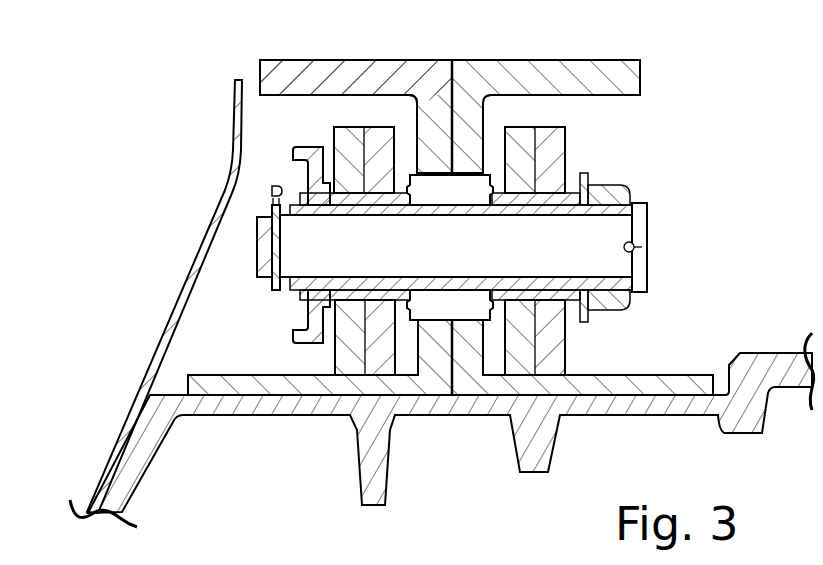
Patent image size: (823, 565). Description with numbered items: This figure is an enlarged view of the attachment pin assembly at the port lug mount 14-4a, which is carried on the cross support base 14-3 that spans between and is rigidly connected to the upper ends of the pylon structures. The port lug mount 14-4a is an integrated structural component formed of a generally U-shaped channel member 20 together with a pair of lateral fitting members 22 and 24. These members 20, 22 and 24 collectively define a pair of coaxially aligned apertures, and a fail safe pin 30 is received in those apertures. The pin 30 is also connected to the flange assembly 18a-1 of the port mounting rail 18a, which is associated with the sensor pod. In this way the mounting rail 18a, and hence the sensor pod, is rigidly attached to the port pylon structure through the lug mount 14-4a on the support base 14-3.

The port mounting rail 18a is at (622, 83).
The flange assembly 18a-1 is at (470, 143).
The U-shaped channel member 20 is at (518, 160).
The port lug mount 14-4a is at (675, 165).
The fail safe pin 30 is at (469, 254).
The lateral fitting member 22 is at (266, 375).
The lateral fitting member 24 is at (612, 380).
The cross support base 14-3 is at (290, 418).